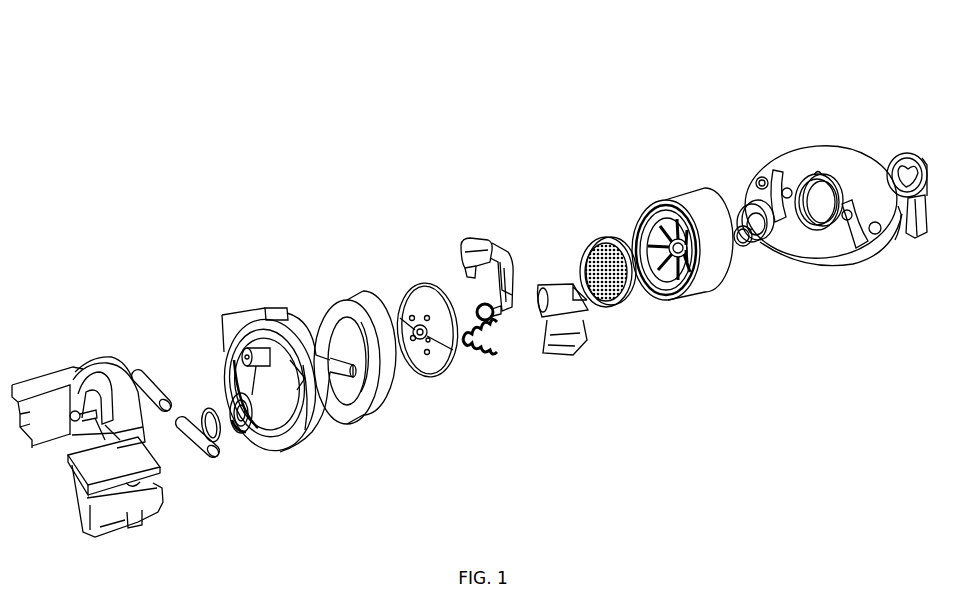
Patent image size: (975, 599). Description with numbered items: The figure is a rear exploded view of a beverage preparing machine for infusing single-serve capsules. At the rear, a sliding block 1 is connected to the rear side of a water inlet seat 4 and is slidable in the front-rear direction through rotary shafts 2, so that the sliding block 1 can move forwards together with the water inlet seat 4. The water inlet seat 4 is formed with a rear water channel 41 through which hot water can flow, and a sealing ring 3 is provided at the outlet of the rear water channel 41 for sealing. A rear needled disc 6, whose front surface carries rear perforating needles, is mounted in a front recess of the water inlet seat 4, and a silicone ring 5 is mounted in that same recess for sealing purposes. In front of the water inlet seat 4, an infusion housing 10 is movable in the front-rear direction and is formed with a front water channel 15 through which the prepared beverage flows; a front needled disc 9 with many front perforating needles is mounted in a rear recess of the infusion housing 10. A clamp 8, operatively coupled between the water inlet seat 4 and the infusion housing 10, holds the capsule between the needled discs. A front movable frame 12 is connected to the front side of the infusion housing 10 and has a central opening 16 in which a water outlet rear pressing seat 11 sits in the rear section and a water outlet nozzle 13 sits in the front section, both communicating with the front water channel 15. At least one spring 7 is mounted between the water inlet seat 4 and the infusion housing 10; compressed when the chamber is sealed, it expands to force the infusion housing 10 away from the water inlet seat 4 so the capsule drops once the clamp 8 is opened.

The sliding block 1 is at (60, 415).
The rotary shafts 2 is at (150, 388).
The sealing ring 3 is at (209, 405).
The water inlet seat 4 is at (276, 318).
The rear water channel 41 is at (243, 437).
The silicone ring 5 is at (359, 297).
The rear needled disc 6 is at (425, 285).
The spring 7 is at (482, 330).
The clamp 8 is at (565, 290).
The front needled disc 9 is at (609, 270).
The infusion housing 10 is at (685, 205).
The water outlet rear pressing seat 11 is at (760, 215).
The front movable frame 12 is at (842, 183).
The water outlet nozzle 13 is at (907, 163).
The front water channel 15 is at (683, 255).
The central opening 16 is at (819, 222).